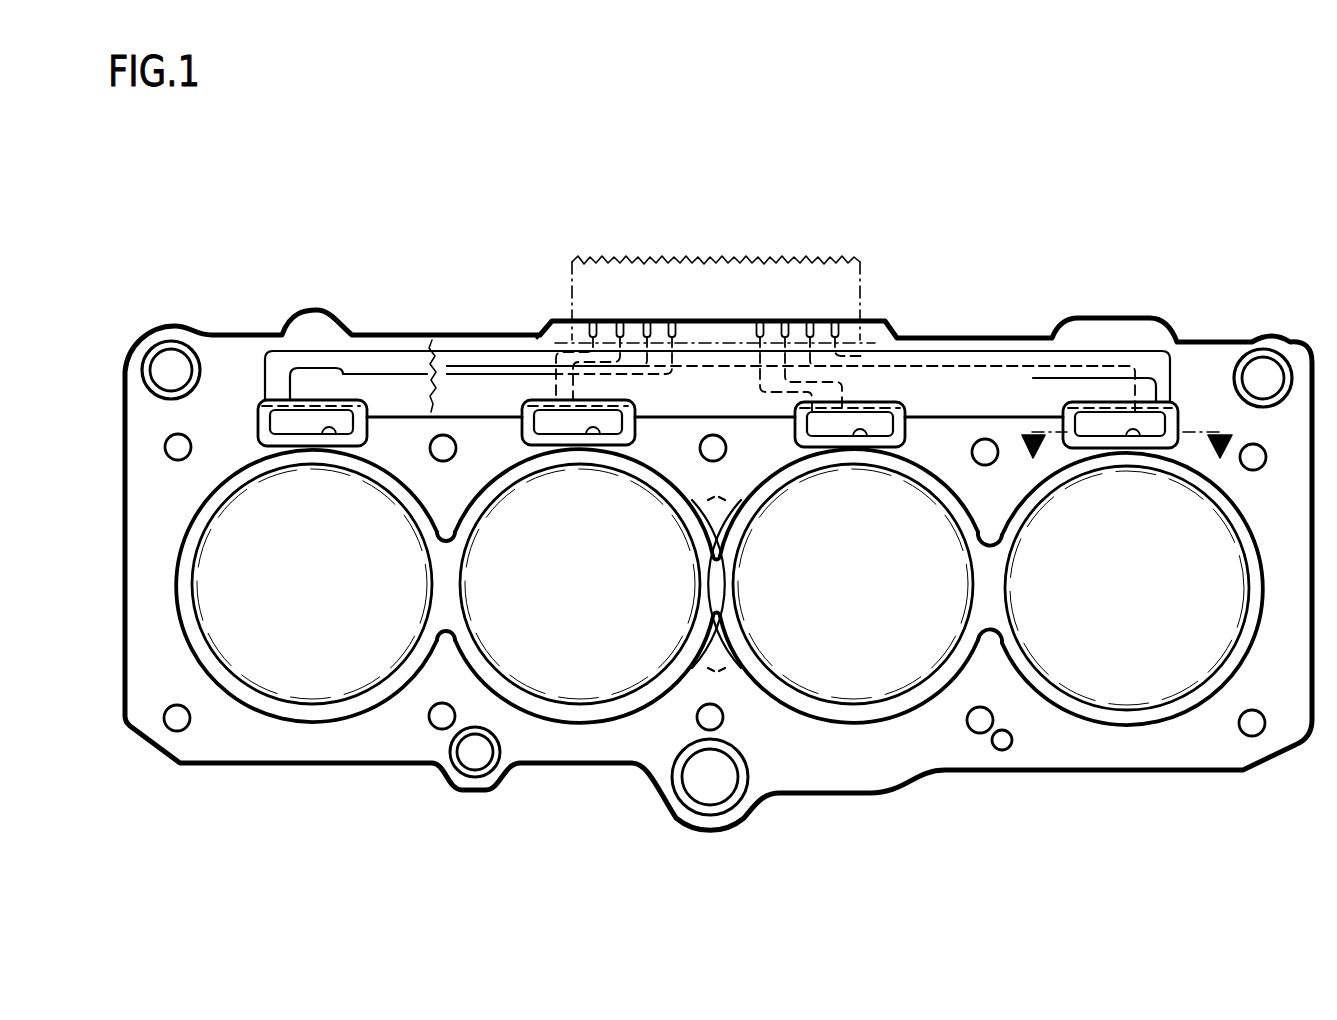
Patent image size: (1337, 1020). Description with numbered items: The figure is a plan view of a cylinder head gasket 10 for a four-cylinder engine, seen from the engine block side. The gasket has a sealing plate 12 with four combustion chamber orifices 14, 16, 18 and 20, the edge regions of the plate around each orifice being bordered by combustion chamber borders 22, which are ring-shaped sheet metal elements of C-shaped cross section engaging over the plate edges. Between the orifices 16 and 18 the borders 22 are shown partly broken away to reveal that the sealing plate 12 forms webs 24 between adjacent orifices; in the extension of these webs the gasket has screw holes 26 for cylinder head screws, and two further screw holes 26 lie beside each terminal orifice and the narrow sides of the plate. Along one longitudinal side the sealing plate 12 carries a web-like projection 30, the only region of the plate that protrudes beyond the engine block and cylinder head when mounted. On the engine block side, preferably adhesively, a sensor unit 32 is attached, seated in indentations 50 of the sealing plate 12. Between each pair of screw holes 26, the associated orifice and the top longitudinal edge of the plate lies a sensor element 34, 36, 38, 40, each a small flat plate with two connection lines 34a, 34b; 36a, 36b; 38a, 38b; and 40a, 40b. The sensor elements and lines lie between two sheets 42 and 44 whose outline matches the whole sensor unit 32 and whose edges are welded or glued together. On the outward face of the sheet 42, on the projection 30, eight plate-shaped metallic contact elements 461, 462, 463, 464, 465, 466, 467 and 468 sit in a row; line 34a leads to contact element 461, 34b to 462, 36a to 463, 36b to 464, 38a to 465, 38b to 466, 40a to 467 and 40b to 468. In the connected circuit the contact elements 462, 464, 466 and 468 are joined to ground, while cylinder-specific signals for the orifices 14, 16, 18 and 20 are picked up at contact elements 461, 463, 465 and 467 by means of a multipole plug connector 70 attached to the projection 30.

The cylinder head gasket 10 is at (205, 320).
The sealing plate 12 is at (333, 742).
The combustion chamber orifice 14 is at (262, 676).
The combustion chamber orifice 16 is at (545, 680).
The combustion chamber orifice 18 is at (857, 695).
The combustion chamber orifice 20 is at (1120, 707).
The combustion chamber border 22 is at (630, 703).
The web 24 is at (716, 583).
The screw hole 26 is at (190, 452).
The web-like projection 30 is at (876, 338).
The sensor unit 32 is at (443, 345).
The sensor element 34 is at (248, 408).
The connection line 34a is at (283, 412).
The connection line 34b is at (323, 398).
The sensor element 36 is at (520, 400).
The connection line 36a is at (545, 405).
The connection line 36b is at (580, 410).
The sensor element 38 is at (907, 417).
The connection line 38a is at (838, 385).
The connection line 38b is at (877, 420).
The sensor element 40 is at (1180, 425).
The connection line 40a is at (1110, 400).
The connection line 40b is at (1140, 412).
The sheet 42 is at (1050, 385).
The sheet 44 is at (370, 373).
The contact element 461 is at (593, 321).
The contact element 462 is at (620, 321).
The contact element 463 is at (647, 321).
The contact element 464 is at (672, 321).
The contact element 465 is at (760, 321).
The contact element 466 is at (785, 321).
The contact element 467 is at (810, 321).
The contact element 468 is at (835, 321).
The indentation 50 is at (330, 428).
The multipole plug connector 70 is at (555, 292).